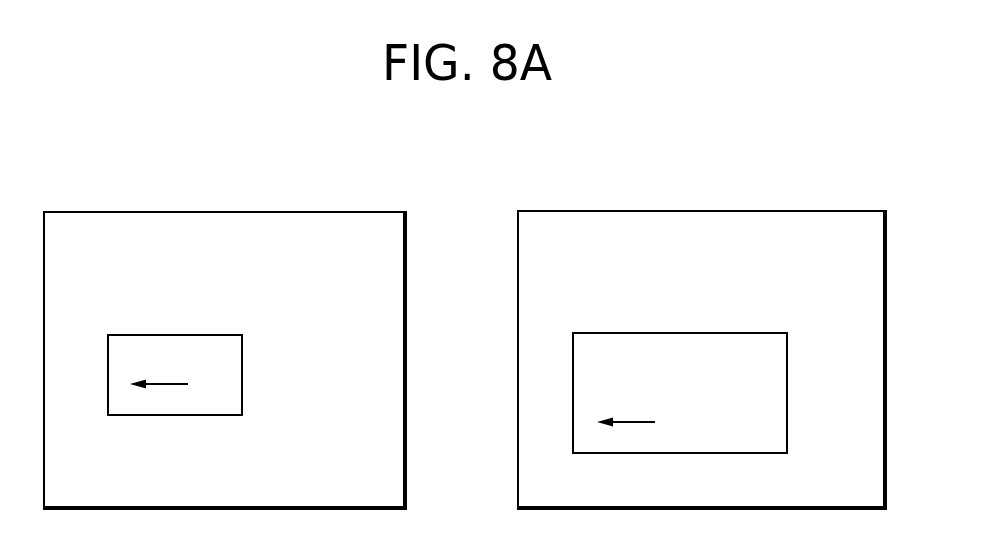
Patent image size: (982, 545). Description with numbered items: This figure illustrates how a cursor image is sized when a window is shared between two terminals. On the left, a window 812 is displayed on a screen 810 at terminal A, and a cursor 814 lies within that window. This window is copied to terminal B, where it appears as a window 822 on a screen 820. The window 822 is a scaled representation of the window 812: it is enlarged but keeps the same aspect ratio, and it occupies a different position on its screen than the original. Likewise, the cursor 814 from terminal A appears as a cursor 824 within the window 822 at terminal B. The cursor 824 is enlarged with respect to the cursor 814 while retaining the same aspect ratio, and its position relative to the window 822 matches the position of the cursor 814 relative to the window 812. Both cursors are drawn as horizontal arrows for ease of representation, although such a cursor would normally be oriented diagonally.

The screen 810 is at (360, 212).
The window 812 is at (198, 335).
The cursor 814 is at (167, 385).
The screen 820 is at (828, 209).
The window 822 is at (720, 313).
The cursor 824 is at (632, 422).